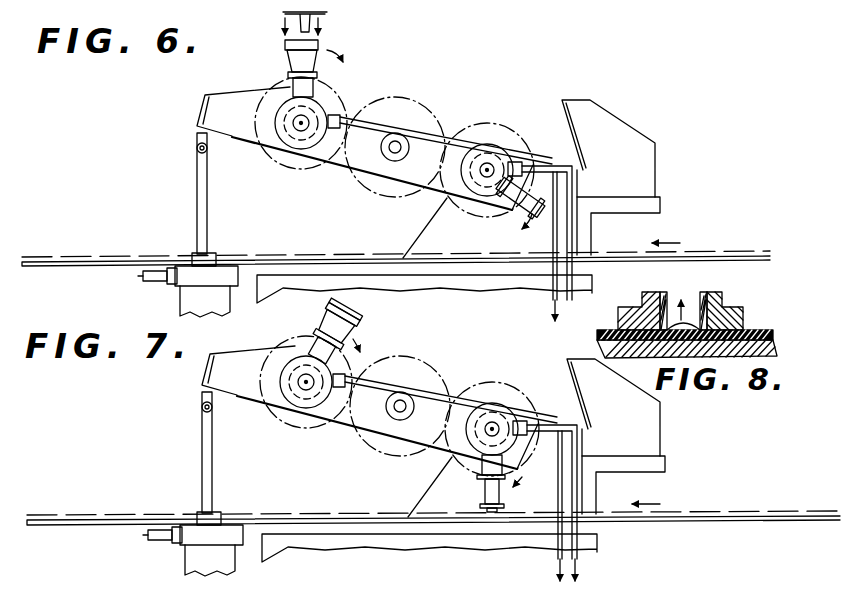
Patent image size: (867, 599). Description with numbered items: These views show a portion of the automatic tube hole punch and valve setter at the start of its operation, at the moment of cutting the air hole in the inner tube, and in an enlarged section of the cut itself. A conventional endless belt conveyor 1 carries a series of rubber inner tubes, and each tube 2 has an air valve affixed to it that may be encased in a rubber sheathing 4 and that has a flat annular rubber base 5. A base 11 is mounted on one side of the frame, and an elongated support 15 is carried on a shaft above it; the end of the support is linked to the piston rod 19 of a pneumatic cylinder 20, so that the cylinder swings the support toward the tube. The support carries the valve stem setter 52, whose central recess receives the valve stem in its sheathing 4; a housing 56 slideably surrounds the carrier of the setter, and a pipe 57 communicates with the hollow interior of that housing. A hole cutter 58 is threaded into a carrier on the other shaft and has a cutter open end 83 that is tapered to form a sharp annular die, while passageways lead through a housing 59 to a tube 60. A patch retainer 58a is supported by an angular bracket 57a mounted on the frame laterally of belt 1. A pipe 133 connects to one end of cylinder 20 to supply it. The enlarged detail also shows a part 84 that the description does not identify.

In FIG. 6, the endless belt conveyor 1 is at (52, 271).
In FIG. 7, the endless belt conveyor 1 is at (433, 539).
In FIG. 8, the endless belt conveyor 1 is at (776, 346).
In FIG. 6, the tube 2 is at (77, 257).
In FIG. 7, the tube 2 is at (433, 500).
In FIG. 8, the tube 2 is at (760, 331).
In FIG. 6, the rubber sheathing 4 is at (290, 19).
In FIG. 6, the flat annular rubber base 5 is at (322, 14).
In FIG. 7, the flat annular rubber base 5 is at (361, 306).
In FIG. 6, the base 11 is at (443, 215).
In FIG. 6, the elongated support 15 is at (247, 106).
In FIG. 7, the elongated support 15 is at (370, 395).
In FIG. 6, the piston rod 19 is at (198, 192).
In FIG. 7, the piston rod 19 is at (186, 458).
In FIG. 6, the pneumatic cylinder 20 is at (192, 302).
In FIG. 7, the pneumatic cylinder 20 is at (190, 562).
In FIG. 6, the valve stem setter 52 is at (321, 43).
In FIG. 7, the valve stem setter 52 is at (316, 333).
In FIG. 6, the housing 56 is at (306, 120).
In FIG. 7, the housing 56 is at (353, 371).
In FIG. 6, the pipe 57 is at (428, 130).
In FIG. 7, the pipe 57 is at (447, 477).
In FIG. 6, the angular bracket 57a is at (708, 201).
In FIG. 7, the angular bracket 57a is at (651, 478).
In FIG. 6, the hole cutter 58 is at (520, 211).
In FIG. 7, the hole cutter 58 is at (469, 483).
In FIG. 8, the hole cutter 58 is at (655, 296).
In FIG. 6, the patch retainer 58a is at (657, 165).
In FIG. 7, the patch retainer 58a is at (644, 436).
In FIG. 6, the housing 59 is at (478, 148).
In FIG. 7, the housing 59 is at (509, 407).
In FIG. 6, the tube 60 is at (574, 284).
In FIG. 7, the tube 60 is at (582, 503).
In FIG. 8, the cutter open end 83 is at (720, 318).
In FIG. 8, the block 84 is at (622, 313).
In FIG. 6, the pipe 133 is at (146, 283).
In FIG. 7, the pipe 133 is at (142, 554).